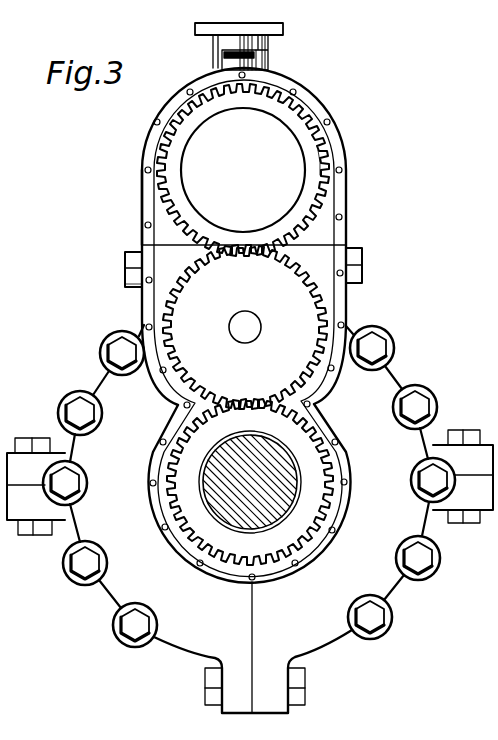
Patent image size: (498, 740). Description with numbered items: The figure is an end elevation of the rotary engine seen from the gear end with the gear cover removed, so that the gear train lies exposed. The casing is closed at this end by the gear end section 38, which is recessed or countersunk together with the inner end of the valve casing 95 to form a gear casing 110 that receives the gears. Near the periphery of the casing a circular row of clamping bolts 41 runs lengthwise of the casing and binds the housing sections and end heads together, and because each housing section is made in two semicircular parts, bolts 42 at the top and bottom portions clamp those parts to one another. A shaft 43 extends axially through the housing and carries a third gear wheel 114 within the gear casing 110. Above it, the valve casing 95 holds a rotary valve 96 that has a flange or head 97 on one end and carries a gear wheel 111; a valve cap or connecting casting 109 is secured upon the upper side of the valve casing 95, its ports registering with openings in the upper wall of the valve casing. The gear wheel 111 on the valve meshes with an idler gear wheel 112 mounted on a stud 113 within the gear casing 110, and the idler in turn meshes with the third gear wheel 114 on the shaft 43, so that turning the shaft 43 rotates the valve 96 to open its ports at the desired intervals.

The gear end section 38 is at (125, 266).
The clamping bolts 41 is at (415, 398).
The bolts 42 is at (355, 252).
The shaft 43 is at (462, 430).
The valve casing 95 is at (148, 190).
The rotary valve 96 is at (263, 157).
The flange or head 97 is at (273, 117).
The valve cap or connecting casting 109 is at (218, 50).
The gear casing 110 is at (320, 230).
The gear wheel 111 is at (310, 158).
The idler gear wheel 112 is at (312, 313).
The stud 113 is at (250, 339).
The third gear wheel 114 is at (250, 482).